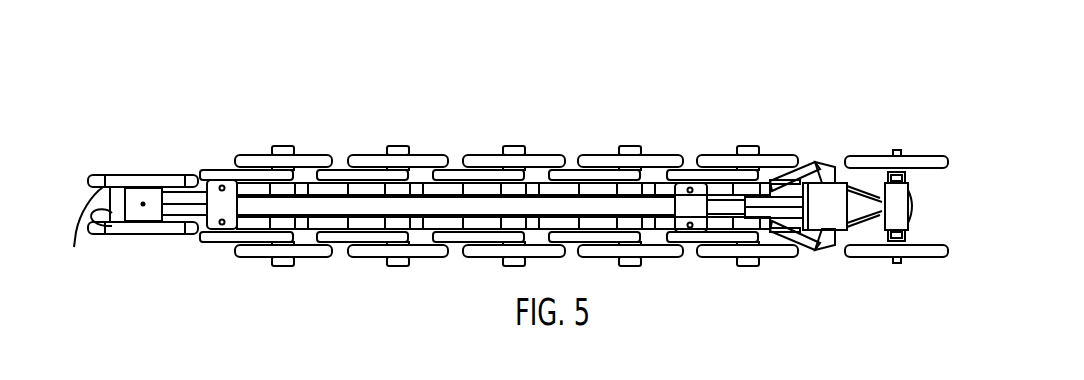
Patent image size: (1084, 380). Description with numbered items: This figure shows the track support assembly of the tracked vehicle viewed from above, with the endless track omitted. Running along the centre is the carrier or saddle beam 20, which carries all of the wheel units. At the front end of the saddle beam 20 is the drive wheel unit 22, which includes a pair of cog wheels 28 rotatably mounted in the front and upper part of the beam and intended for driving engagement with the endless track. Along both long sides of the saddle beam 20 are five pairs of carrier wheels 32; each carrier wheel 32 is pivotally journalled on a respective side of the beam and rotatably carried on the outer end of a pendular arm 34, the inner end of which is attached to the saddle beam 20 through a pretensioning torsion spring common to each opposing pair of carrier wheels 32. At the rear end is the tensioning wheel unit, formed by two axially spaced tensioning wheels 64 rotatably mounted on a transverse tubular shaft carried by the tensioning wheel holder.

The saddle beam 20 is at (479, 199).
The drive wheel unit 22 is at (141, 172).
The cog wheels 28 is at (92, 230).
The carrier wheels 32 is at (318, 158).
The pendular arm 34 is at (246, 173).
The tensioning wheels 64 is at (925, 160).